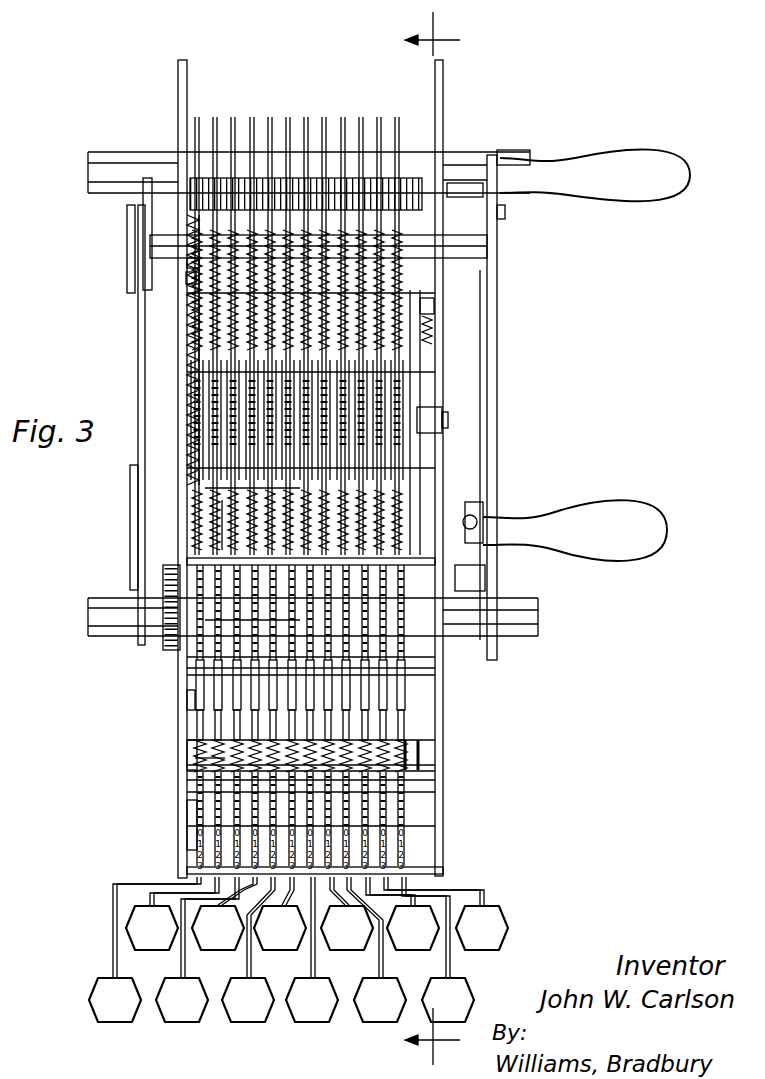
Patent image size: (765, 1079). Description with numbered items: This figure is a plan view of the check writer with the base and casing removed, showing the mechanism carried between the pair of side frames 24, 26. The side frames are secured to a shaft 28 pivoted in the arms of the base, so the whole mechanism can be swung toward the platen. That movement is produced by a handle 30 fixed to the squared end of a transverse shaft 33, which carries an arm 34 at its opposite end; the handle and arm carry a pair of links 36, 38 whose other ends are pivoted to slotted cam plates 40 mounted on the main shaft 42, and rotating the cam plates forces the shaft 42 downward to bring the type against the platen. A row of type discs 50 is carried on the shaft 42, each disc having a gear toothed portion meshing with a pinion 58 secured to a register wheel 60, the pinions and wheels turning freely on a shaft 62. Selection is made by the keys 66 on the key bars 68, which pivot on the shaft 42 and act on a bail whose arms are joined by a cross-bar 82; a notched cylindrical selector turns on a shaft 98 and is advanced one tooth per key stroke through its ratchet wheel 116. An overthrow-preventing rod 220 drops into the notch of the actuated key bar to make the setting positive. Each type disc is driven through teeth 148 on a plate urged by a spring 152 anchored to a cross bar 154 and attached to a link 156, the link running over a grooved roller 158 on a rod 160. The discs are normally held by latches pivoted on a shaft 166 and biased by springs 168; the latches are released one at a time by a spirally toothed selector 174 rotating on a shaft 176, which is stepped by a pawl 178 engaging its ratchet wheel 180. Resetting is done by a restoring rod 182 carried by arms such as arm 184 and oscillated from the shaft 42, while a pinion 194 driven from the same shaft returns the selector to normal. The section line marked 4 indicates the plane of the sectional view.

The section line 4- 4 is at (432, 540).
The side frame 24 is at (440, 742).
The side frame 26 is at (180, 358).
The shaft 28 is at (518, 155).
The handle 30 is at (505, 212).
The shaft 33 is at (465, 252).
The arm 34 is at (178, 262).
The link 36 is at (497, 388).
The link 38 is at (138, 333).
The slotted cam plate 40 is at (497, 583).
The shaft 42 is at (512, 630).
The type disc 50 is at (228, 625).
The pinion 58 is at (432, 792).
The register wheel 60 is at (440, 868).
The shaft 62 is at (188, 826).
The key 66 is at (278, 967).
The key bar 68 is at (113, 940).
The cross-bar 82 is at (185, 280).
The shaft 98 is at (445, 425).
The ratchet wheel 116 is at (432, 337).
The teeth 148 is at (228, 500).
The spring 152 is at (210, 495).
The bar 154 is at (200, 560).
The link 156 is at (288, 115).
The grooved roller 158 is at (352, 165).
The rod 160 is at (478, 190).
The shaft 166 is at (192, 745).
The spring 168 is at (200, 758).
The selector 174 is at (447, 670).
The shaft 176 is at (188, 698).
The pawl 178 is at (440, 762).
The ratchet wheel 180 is at (432, 690).
The restoring rod 182 is at (483, 570).
The arm 184 is at (483, 560).
The pinion 194 is at (190, 420).
The rod 220 is at (430, 315).